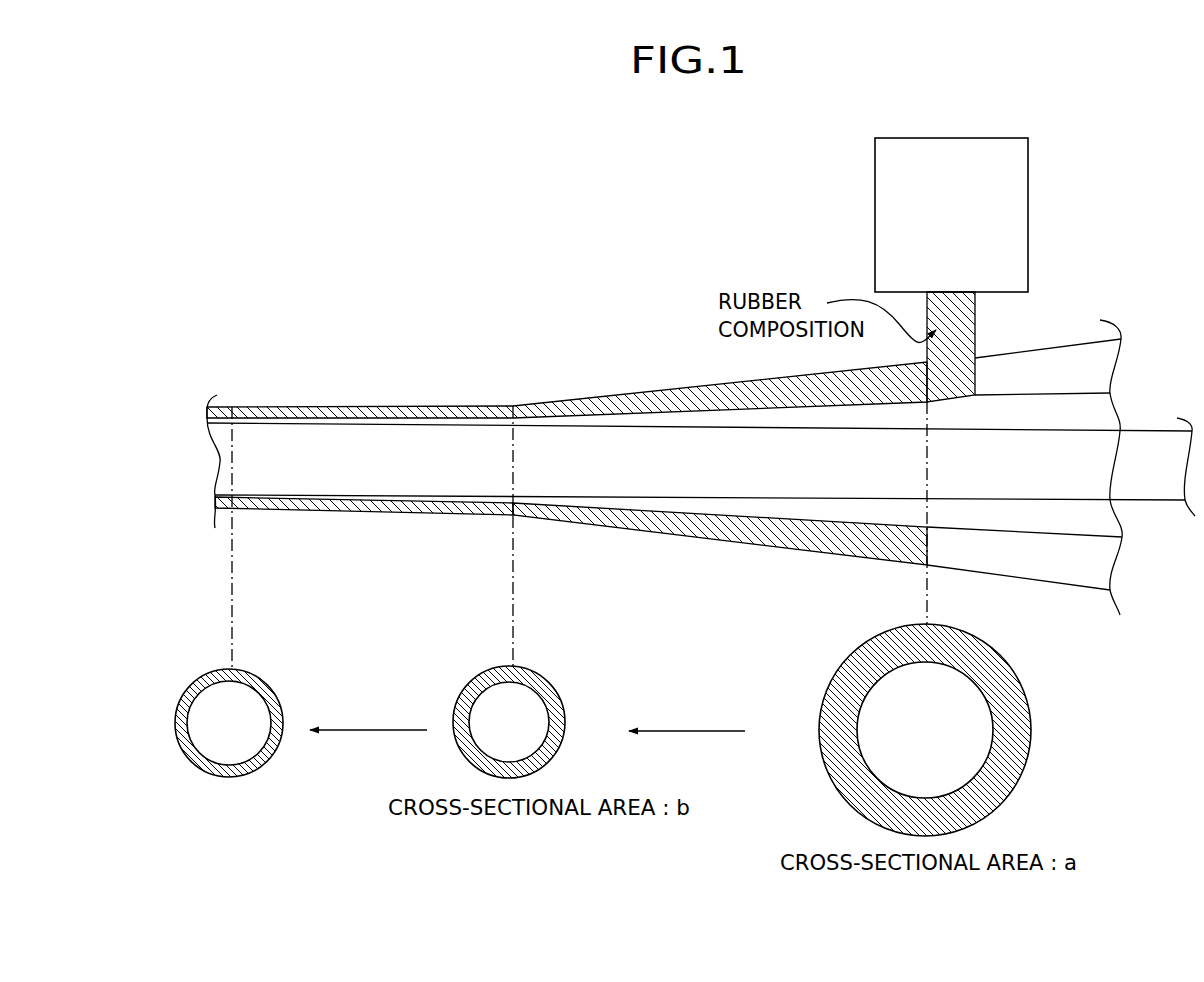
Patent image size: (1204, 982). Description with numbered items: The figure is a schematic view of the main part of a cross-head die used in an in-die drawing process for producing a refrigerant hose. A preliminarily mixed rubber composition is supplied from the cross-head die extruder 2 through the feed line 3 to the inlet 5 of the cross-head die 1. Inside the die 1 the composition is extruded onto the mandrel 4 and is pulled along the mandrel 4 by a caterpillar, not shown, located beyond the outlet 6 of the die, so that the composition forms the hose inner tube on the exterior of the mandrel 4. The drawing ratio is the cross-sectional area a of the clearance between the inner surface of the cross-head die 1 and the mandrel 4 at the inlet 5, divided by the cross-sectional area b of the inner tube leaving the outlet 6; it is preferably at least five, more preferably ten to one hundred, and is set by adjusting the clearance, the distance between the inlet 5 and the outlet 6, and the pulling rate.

The cross-head die 1 is at (583, 386).
The cross-head die extruder 2 is at (1044, 246).
The feed line 3 is at (980, 333).
The mandrel 4 is at (1117, 468).
The inlet 5 is at (930, 543).
The outlet 6 is at (515, 510).